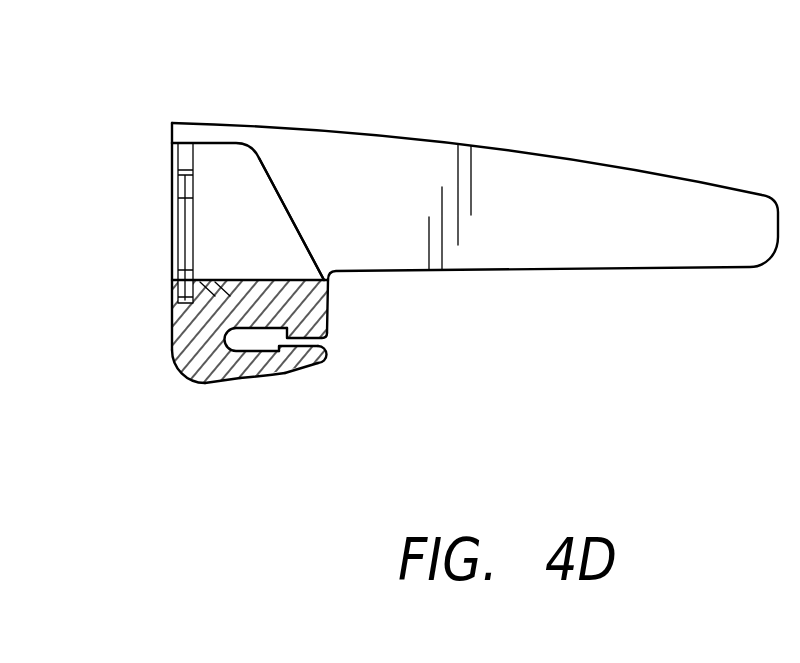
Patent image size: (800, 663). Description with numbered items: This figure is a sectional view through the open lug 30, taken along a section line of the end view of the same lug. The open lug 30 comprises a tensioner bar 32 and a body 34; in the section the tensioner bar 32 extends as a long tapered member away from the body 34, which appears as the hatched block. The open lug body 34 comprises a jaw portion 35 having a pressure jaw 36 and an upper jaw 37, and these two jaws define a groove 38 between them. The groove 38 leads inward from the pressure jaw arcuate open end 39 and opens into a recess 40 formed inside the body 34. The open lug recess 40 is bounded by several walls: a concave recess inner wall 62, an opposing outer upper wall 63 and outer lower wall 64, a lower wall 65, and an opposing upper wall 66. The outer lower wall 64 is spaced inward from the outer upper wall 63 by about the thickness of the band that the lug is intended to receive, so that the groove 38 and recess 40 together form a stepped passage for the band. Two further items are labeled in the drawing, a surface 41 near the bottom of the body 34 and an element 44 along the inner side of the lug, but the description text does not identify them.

The open lug 30 is at (337, 117).
The tensioner bar 32 is at (563, 170).
The body 34 is at (175, 360).
The jaw portion 35 is at (328, 297).
The pressure jaw 36 is at (312, 370).
The upper jaw 37 is at (308, 284).
The groove 38 is at (329, 325).
The pressure jaw arcuate open end 39 is at (328, 353).
The recess 40 is at (268, 383).
The bottom surface 41 is at (292, 376).
The resilient arm 44 is at (176, 243).
The concave recess inner wall 62 is at (186, 338).
The outer upper wall 63 is at (268, 316).
The outer lower wall 64 is at (256, 297).
The lower wall 65 is at (237, 363).
The upper wall 66 is at (230, 342).